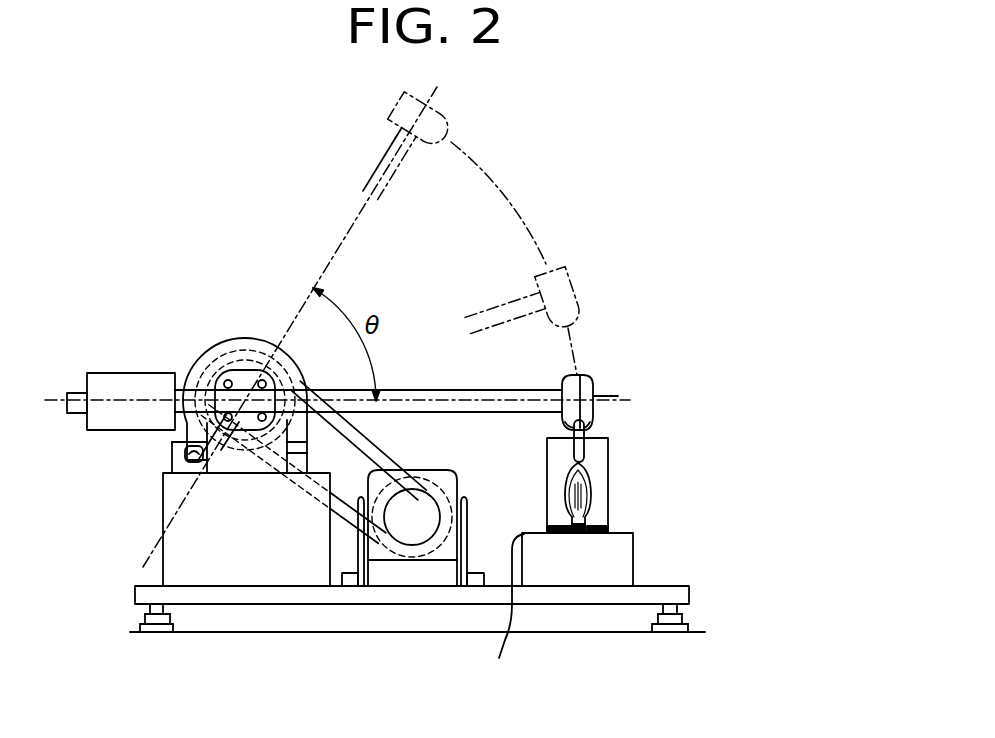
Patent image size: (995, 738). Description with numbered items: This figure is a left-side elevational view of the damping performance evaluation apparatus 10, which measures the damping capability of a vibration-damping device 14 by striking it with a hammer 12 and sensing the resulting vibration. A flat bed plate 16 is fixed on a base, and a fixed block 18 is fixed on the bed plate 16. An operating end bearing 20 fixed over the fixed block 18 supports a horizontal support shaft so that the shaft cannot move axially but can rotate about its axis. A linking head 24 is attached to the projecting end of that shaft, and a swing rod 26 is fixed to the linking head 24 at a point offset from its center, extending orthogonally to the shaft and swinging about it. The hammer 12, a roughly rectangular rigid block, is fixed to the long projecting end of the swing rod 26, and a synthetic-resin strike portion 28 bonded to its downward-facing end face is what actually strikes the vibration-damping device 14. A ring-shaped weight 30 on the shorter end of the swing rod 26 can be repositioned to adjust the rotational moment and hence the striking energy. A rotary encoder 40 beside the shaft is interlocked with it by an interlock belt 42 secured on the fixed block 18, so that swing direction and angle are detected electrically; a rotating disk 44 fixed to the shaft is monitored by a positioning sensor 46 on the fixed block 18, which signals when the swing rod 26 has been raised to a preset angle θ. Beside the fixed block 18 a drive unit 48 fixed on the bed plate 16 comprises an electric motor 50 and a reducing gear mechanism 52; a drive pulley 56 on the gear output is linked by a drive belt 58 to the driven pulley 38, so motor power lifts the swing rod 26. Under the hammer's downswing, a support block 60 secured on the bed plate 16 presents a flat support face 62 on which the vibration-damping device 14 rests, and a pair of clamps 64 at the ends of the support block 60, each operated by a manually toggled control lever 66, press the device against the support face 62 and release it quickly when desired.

The damping performance evaluation apparatus 10 is at (633, 366).
The hammer 12 is at (587, 374).
The vibration-damping device 14 is at (610, 477).
The bed plate 16 is at (678, 595).
The fixed block 18 is at (172, 508).
The operating end bearing 20 is at (203, 358).
The linking head 24 is at (238, 370).
The swing rod 26 is at (474, 389).
The strike portion 28 is at (598, 426).
The weight 30 is at (124, 384).
The driven pulley 38 is at (247, 338).
The rotary encoder 40 is at (173, 469).
The interlock belt 42 is at (178, 441).
The rotating disk 44 is at (252, 366).
The positioning sensor 46 is at (298, 374).
The drive unit 48 is at (462, 591).
The electric motor 50 is at (413, 530).
The reducing gear mechanism 52 is at (372, 472).
The drive pulley 56 is at (423, 500).
The drive belt 58 is at (390, 468).
The support block 60 is at (636, 558).
The support face 62 is at (503, 608).
The clamp 64 is at (596, 498).
The control lever 66 is at (580, 451).